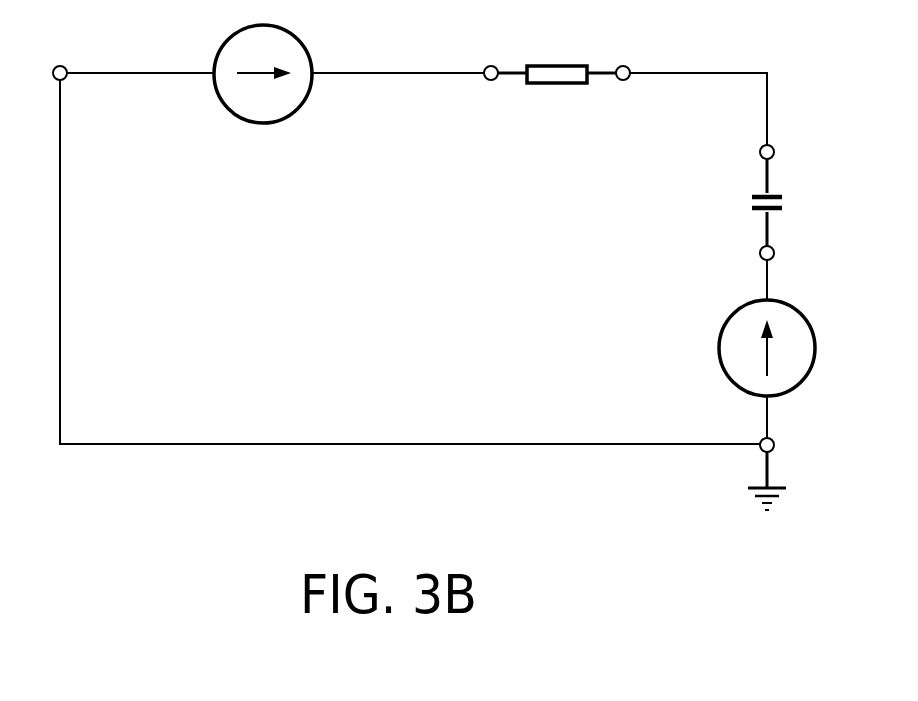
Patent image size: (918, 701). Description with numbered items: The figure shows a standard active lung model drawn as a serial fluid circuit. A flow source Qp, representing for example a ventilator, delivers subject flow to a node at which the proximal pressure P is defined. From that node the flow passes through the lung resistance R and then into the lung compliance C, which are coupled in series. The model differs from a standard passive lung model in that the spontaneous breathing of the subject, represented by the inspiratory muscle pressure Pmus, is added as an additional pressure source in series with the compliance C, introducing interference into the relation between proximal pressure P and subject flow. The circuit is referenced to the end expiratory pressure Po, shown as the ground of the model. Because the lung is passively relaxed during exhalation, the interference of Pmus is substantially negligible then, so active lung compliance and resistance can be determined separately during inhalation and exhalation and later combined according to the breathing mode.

The flow source Qp is at (262, 112).
The proximal pressure P is at (398, 59).
The lung resistance R is at (552, 66).
The lung compliance C is at (754, 205).
The inspiratory muscle pressure Pmus is at (720, 349).
The end expiratory pressure Po is at (745, 499).